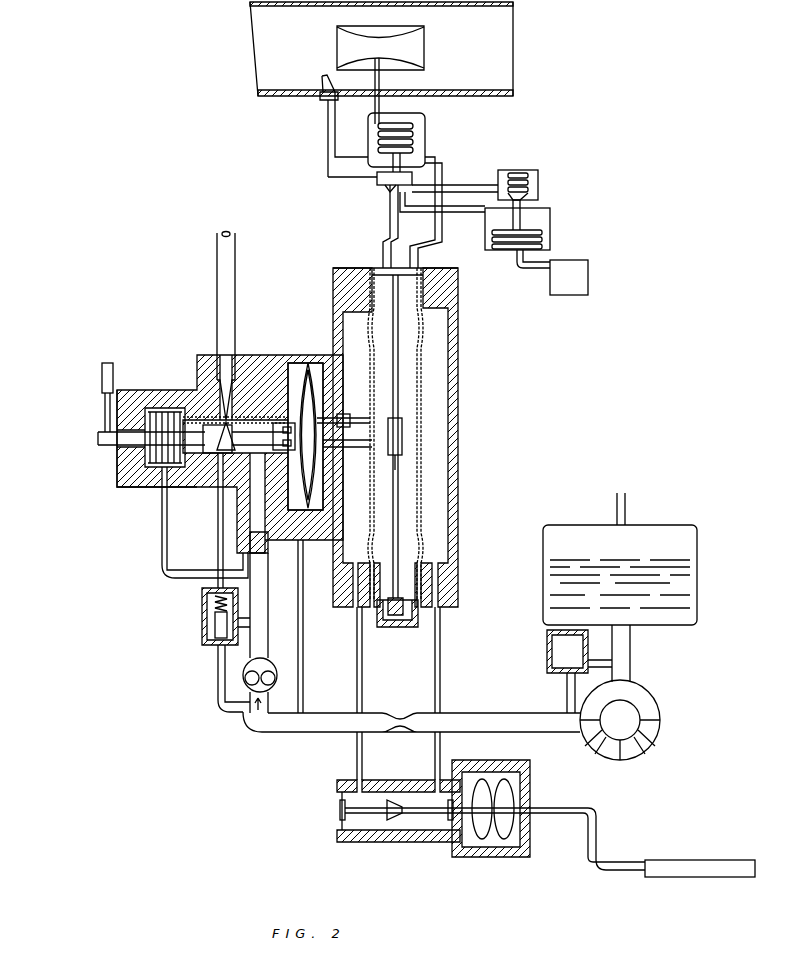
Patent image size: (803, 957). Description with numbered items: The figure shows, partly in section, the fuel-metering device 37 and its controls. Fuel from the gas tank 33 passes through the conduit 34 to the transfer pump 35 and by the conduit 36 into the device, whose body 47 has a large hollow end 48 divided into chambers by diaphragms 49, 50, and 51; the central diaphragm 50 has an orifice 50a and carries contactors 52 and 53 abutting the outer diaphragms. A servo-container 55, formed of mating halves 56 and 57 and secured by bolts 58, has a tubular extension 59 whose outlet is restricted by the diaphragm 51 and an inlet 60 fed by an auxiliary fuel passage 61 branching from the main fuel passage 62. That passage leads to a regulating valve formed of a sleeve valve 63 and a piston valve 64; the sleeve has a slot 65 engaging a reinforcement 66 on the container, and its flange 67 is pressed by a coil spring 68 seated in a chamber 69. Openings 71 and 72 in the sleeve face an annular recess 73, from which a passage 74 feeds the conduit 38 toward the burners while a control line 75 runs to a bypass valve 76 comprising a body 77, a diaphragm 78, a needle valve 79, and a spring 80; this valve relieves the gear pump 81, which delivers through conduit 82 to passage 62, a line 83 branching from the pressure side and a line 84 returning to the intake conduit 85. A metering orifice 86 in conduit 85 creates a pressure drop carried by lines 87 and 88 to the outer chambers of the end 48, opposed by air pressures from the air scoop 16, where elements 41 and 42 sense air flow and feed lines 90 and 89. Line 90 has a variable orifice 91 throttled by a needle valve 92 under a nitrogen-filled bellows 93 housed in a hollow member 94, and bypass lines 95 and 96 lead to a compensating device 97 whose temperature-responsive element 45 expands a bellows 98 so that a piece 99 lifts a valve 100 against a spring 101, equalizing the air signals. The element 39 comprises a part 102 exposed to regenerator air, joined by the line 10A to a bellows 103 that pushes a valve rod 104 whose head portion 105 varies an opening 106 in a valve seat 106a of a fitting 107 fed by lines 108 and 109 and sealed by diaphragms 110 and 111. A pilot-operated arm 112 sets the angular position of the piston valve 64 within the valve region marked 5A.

The air scoop 16 is at (250, 10).
The pressure-sensing element 42 is at (337, 40).
The pressure-sensing element 41 is at (322, 78).
The hollow member 94 is at (425, 118).
The nitrogen-filled bellows 93 is at (413, 131).
The needle valve 92 is at (400, 170).
The variable orifice 91 is at (385, 180).
The bypass line 95 is at (446, 190).
The bypass line 96 is at (421, 212).
The line 90 is at (390, 226).
The line 89 is at (442, 230).
The spring 101 is at (515, 170).
The valve 100 is at (528, 196).
The piece 99 is at (521, 215).
The compensating device 97 is at (572, 214).
The bellows 98 is at (545, 238).
The temperature-responsive element 45 is at (560, 270).
The fuel-metering device 37 is at (500, 406).
The large hollow end 48 is at (455, 610).
The orifice 50a is at (398, 628).
The diaphragm 51 is at (370, 508).
The diaphragm 49 is at (422, 505).
The diaphragm 50 is at (398, 517).
The contactor 53 is at (393, 460).
The contactor 52 is at (403, 430).
The bolt 58 is at (342, 416).
The tubular extension 59 is at (355, 450).
The body 47 is at (265, 348).
The conduit 38 is at (222, 285).
The opening 71 is at (222, 410).
The annular recess 73 is at (243, 420).
The passage 74 is at (240, 385).
The control line 75 is at (202, 553).
The slot 65 is at (248, 409).
The coil spring 68 is at (155, 490).
The chamber 69 is at (162, 395).
The sleeve valve 63 is at (190, 395).
The pilot-operated arm 112 is at (102, 383).
The opening 72 is at (245, 439).
The bypass valve 76 is at (278, 436).
The servo-container 55 is at (318, 365).
The unit 5A is at (293, 360).
The inlet 60 is at (309, 435).
The mating half 57 is at (320, 455).
The reinforcement 66 is at (272, 467).
The mating half 56 is at (290, 487).
The flange 67 is at (190, 487).
The piston valve 64 is at (198, 492).
The auxiliary fuel passage 61 is at (303, 547).
The main fuel passage 62 is at (257, 507).
The body 77 is at (188, 602).
The diaphragm 78 is at (240, 600).
The spring 80 is at (220, 610).
The needle valve 79 is at (218, 625).
The line 83 is at (245, 620).
The conduit 82 is at (255, 635).
The pump 81 is at (268, 665).
The line 84 is at (217, 688).
The conduit 85 is at (290, 735).
The metering orifice 86 is at (400, 732).
The conduit 36 is at (513, 713).
The line 88 is at (362, 678).
The line 87 is at (440, 676).
The line 109 is at (355, 758).
The line 108 is at (440, 750).
The diaphragm 111 is at (340, 832).
The opening 106 is at (387, 795).
The valve seat 106a is at (385, 831).
The head portion 105 is at (402, 815).
The valve rod 104 is at (410, 810).
The fitting 107 is at (400, 842).
The diaphragm 110 is at (445, 842).
The bellows 103 is at (530, 845).
The conduit 10A is at (560, 813).
The part 102 is at (665, 860).
The temperature-responsive element 39 is at (628, 841).
The gas tank 33 is at (680, 525).
The conduit 34 is at (630, 660).
The transfer pump 35 is at (660, 742).